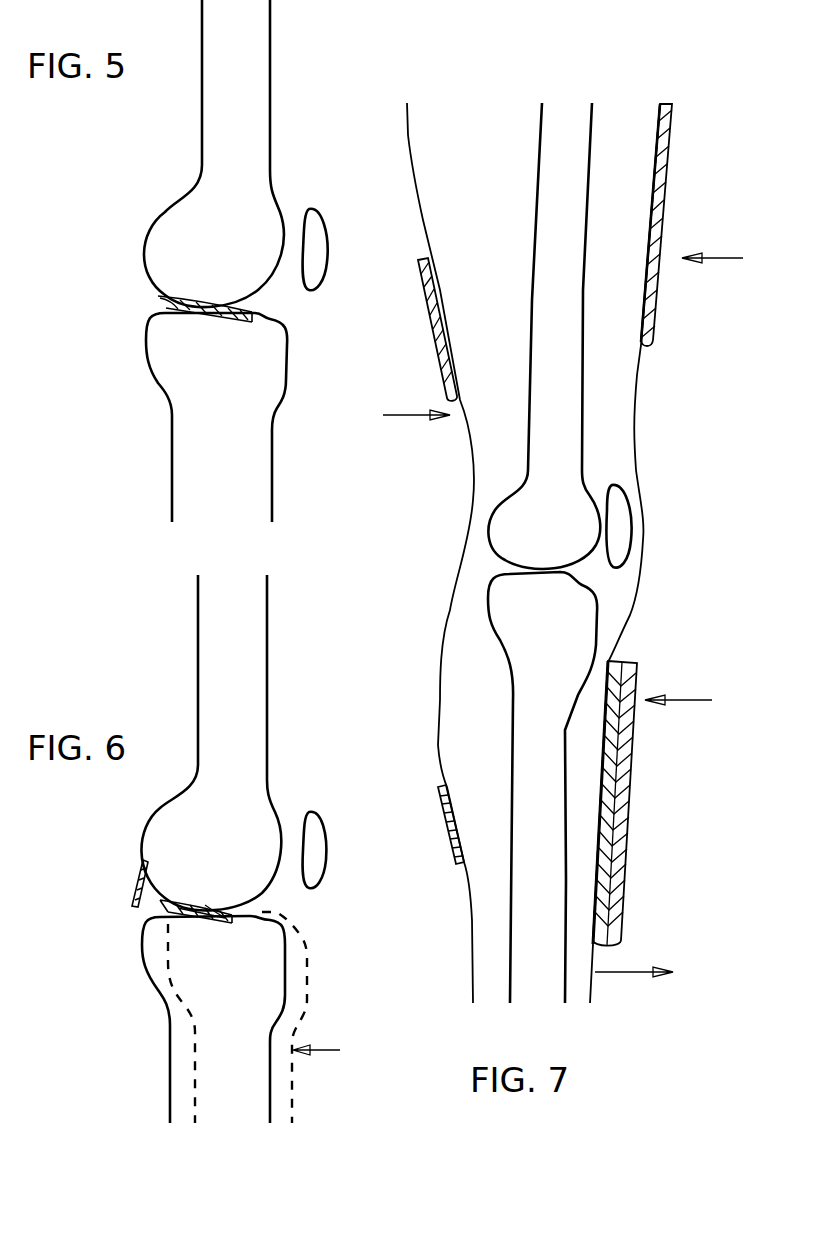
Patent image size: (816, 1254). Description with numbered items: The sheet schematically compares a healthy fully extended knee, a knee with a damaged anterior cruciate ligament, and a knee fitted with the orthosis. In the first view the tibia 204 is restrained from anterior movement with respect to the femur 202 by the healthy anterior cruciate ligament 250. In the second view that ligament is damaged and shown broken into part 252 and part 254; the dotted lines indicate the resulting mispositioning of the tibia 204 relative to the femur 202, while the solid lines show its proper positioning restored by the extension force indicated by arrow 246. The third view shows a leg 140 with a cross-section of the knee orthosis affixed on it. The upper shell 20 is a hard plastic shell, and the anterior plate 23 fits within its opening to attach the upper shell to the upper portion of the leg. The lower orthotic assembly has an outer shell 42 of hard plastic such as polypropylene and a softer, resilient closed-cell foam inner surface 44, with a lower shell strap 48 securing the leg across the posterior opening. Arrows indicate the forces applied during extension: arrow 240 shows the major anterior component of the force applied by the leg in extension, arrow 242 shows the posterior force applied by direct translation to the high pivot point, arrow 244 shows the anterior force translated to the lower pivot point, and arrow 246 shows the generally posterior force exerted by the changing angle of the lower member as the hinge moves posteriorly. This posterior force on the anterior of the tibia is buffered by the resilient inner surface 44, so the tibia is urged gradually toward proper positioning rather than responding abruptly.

In FIG. 7, the upper shell 20 is at (428, 302).
In FIG. 7, the anterior plate 23 is at (670, 157).
In FIG. 7, the outer shell 42 is at (637, 803).
In FIG. 7, the inner surface 44 is at (612, 890).
In FIG. 7, the lower shell strap 48 is at (450, 843).
In FIG. 7, the leg 140 is at (460, 145).
In FIG. 5, the femur 202 is at (205, 242).
In FIG. 6, the femur 202 is at (217, 680).
In FIG. 7, the femur 202 is at (567, 445).
In FIG. 5, the tibia 204 is at (197, 425).
In FIG. 6, the tibia 204 is at (225, 1060).
In FIG. 7, the tibia 204 is at (572, 622).
In FIG. 7, the arrow 240 is at (648, 975).
In FIG. 7, the arrow 242 is at (703, 258).
In FIG. 7, the arrow 244 is at (418, 415).
In FIG. 6, the arrow 246 is at (325, 1050).
In FIG. 7, the arrow 246 is at (700, 700).
In FIG. 5, the anterior cruciate ligament 250 is at (178, 308).
In FIG. 6, the part of damaged anterior cruciate ligament 252 is at (175, 906).
In FIG. 6, the part of damaged anterior cruciate ligament 254 is at (222, 915).